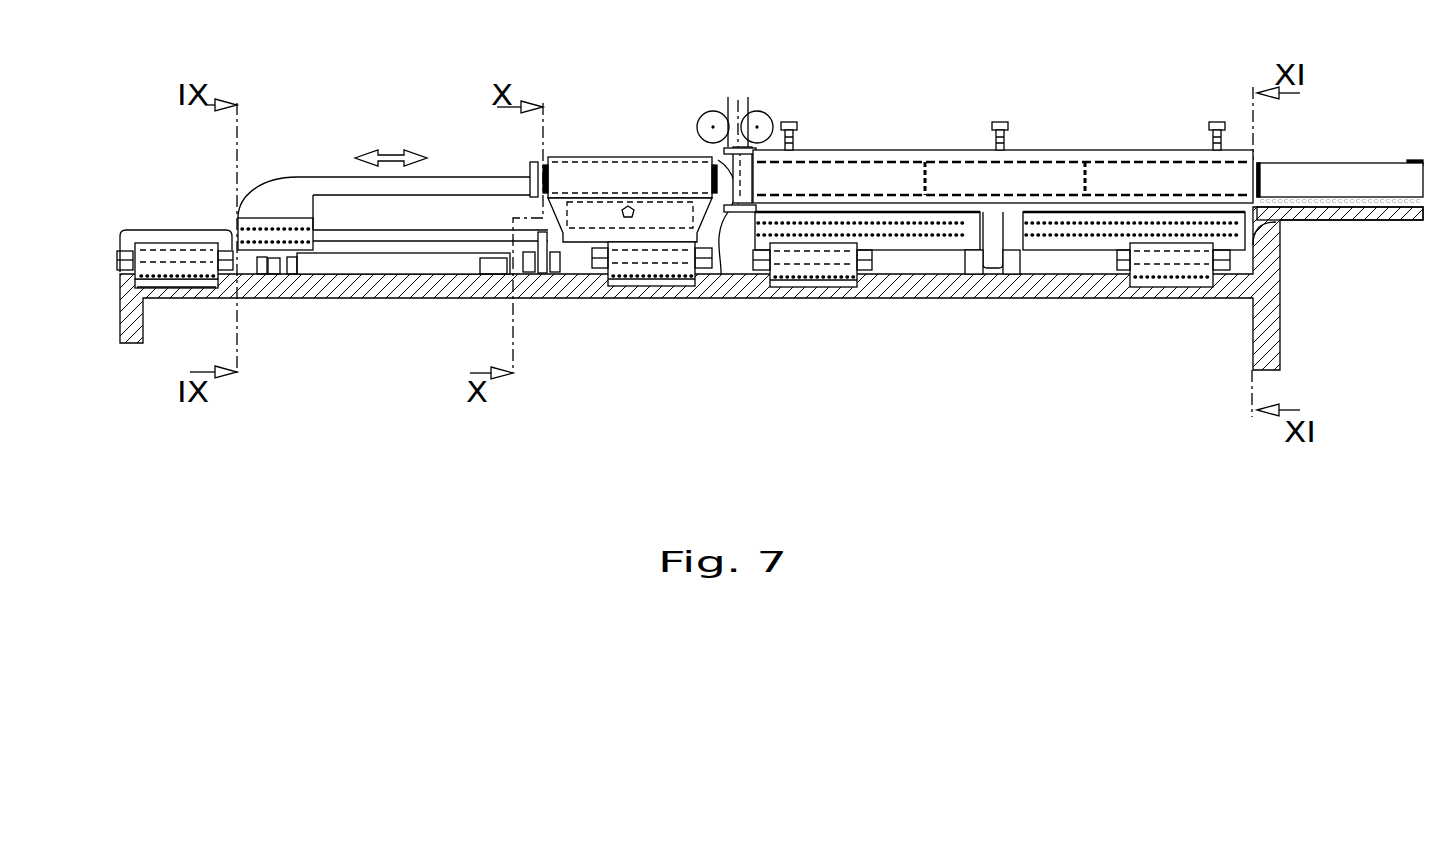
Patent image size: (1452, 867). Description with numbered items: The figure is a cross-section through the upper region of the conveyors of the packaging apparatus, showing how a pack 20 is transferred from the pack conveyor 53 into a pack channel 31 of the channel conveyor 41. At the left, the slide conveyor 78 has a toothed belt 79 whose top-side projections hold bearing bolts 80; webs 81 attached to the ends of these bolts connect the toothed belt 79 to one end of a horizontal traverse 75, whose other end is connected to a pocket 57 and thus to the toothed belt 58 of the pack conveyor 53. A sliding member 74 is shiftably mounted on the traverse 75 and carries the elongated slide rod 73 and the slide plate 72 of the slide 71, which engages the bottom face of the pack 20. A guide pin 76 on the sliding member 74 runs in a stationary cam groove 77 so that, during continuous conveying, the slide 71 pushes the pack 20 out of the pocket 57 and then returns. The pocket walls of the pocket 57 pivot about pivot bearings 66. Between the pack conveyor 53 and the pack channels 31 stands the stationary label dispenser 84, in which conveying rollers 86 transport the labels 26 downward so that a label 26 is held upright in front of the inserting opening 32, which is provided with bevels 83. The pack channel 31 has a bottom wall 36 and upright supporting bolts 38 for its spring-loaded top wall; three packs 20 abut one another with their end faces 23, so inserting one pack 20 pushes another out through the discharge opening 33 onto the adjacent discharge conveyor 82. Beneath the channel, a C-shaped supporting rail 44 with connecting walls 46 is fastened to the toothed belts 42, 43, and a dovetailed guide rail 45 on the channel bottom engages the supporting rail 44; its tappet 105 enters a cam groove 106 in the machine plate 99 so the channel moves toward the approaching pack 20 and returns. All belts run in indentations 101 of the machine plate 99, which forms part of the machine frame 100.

The pack 20 is at (957, 180).
The end face 23 is at (722, 150).
The label 26 is at (735, 204).
The pack channel 31 is at (1088, 141).
The inserting opening 32 is at (745, 212).
The discharge opening 33 is at (1258, 162).
The bottom wall 36 is at (888, 206).
The supporting bolt 38 is at (1001, 123).
The channel conveyor 41 is at (771, 308).
The toothed belt 42 is at (822, 283).
The toothed belt 43 is at (1154, 301).
The supporting rail 44 is at (1000, 282).
The guide rail 45 is at (1151, 310).
The connecting wall 46 is at (1125, 268).
The pack conveyor 53 is at (610, 306).
The pocket 57 is at (618, 157).
The toothed belt 58 is at (667, 268).
The pivot bearing 66 is at (566, 245).
The slide 71 is at (413, 154).
The slide plate 72 is at (535, 160).
The slide rod 73 is at (470, 177).
The sliding member 74 is at (276, 228).
The traverse 75 is at (403, 242).
The guide pin 76 is at (290, 262).
The cam groove 77 is at (297, 268).
The slide conveyor 78 is at (198, 214).
The toothed belt 79 is at (160, 262).
The bearing bolt 80 is at (201, 264).
The web 81 is at (116, 262).
The discharge conveyor 82 is at (1362, 212).
The bevel 83 is at (758, 150).
The label dispenser 84 is at (749, 85).
The conveying roller 86 is at (757, 111).
The machine plate 99 is at (771, 308).
The machine frame 100 is at (849, 303).
The indentation 101 is at (166, 288).
The tappet 105 is at (995, 310).
The cam groove 106 is at (976, 262).